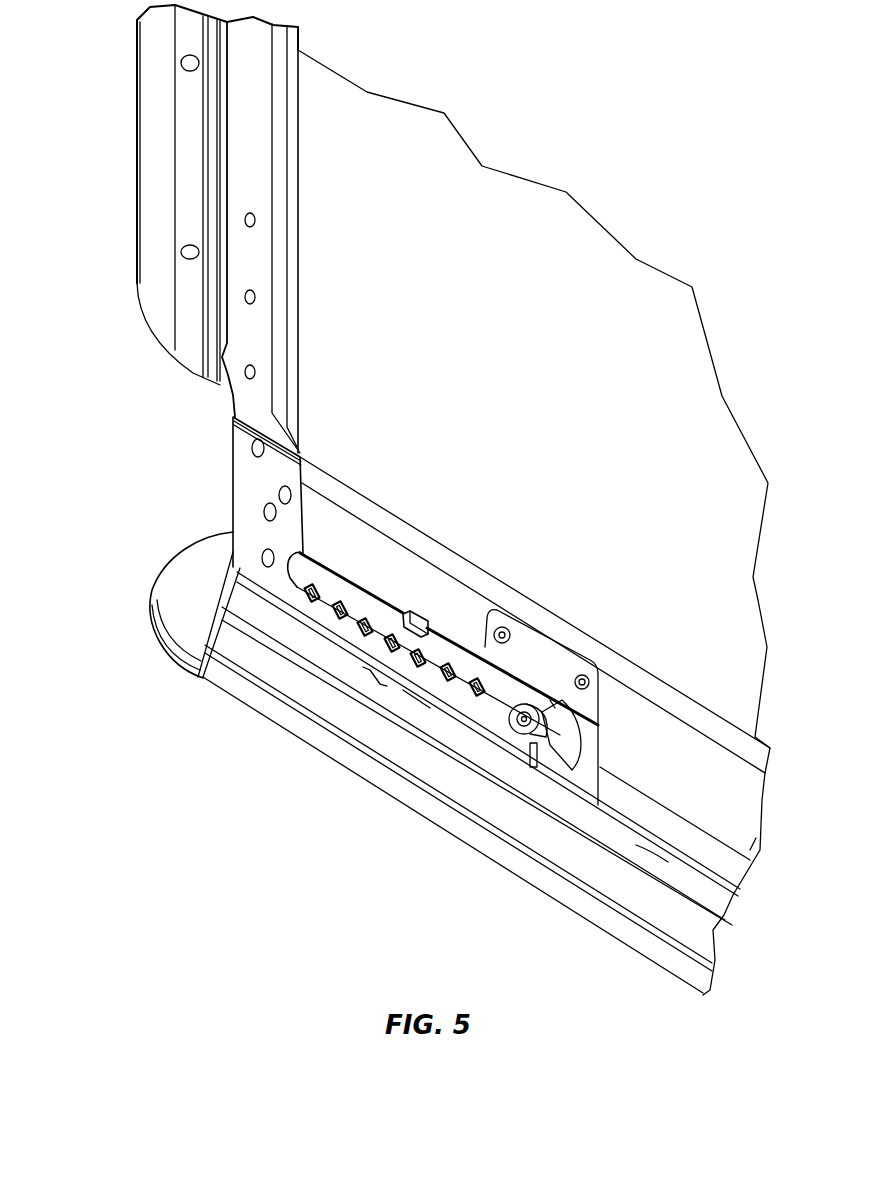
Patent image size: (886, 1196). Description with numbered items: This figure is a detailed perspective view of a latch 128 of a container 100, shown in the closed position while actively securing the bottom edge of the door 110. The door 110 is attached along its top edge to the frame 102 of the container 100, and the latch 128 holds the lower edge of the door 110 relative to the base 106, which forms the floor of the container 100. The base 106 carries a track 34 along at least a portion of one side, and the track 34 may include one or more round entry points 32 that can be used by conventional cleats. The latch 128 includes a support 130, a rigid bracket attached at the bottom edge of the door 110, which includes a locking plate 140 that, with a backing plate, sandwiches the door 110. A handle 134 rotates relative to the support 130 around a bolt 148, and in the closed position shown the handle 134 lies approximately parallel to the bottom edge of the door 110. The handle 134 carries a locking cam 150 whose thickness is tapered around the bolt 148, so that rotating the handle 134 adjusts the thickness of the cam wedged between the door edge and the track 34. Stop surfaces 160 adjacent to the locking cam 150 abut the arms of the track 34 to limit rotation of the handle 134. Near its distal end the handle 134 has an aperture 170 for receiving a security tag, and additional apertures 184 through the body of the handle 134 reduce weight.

The container 100 is at (178, 430).
The frame 102 is at (253, 125).
The base 106 is at (580, 900).
The door 110 is at (534, 522).
The latch 128 is at (526, 574).
The support 130 is at (592, 723).
The handle 134 is at (345, 575).
The locking plate 140 is at (530, 655).
The bolt 148 is at (518, 724).
The locking cam 150 is at (570, 751).
The stop surfaces 160 is at (570, 703).
The aperture 170 is at (300, 548).
The apertures 184 is at (428, 634).
The round entry points 32 is at (377, 677).
The track 34 is at (733, 887).